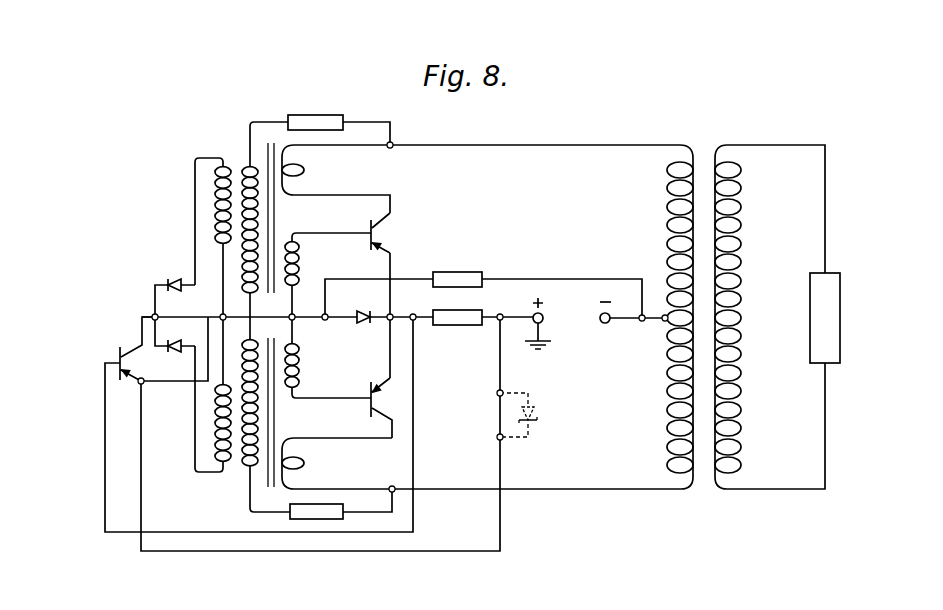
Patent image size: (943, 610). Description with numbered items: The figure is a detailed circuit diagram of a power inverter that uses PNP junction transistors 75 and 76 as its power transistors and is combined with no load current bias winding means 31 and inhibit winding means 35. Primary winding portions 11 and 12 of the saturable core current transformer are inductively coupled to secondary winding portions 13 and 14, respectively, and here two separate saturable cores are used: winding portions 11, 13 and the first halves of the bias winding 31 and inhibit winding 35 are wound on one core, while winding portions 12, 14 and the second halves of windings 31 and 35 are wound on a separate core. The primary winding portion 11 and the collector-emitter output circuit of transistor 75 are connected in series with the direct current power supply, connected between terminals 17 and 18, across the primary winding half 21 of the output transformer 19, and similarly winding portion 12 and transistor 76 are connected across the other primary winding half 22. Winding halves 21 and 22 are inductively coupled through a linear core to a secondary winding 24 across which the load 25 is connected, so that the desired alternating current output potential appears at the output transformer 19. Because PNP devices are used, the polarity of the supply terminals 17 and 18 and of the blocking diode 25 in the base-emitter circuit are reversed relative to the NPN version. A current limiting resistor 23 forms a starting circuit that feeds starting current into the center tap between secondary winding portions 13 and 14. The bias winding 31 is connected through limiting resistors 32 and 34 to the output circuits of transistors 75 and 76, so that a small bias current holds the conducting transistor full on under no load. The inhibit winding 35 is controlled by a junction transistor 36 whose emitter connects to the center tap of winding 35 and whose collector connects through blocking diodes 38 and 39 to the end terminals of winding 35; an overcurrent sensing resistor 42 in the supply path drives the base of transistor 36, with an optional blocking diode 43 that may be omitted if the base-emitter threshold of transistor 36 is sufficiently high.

The primary winding portion 11 is at (306, 170).
The primary winding portion 12 is at (306, 461).
The secondary winding portion 13 is at (300, 257).
The secondary winding portion 14 is at (308, 369).
The positive terminal 17 is at (532, 322).
The grounded negative terminal 18 is at (607, 324).
The output transformer 19 is at (702, 158).
The primary winding half 21 is at (667, 203).
The primary winding half 22 is at (667, 430).
The current limiting resistor 23 is at (452, 273).
The secondary winding 24 is at (742, 294).
The load 25 is at (361, 325).
The no load current bias winding 31 is at (246, 163).
The limiting resistor 32 is at (315, 120).
The limiting resistor 34 is at (327, 520).
The inhibit winding 35 is at (215, 196).
The junction transistor 36 is at (118, 352).
The blocking diode 38 is at (177, 279).
The blocking diode 39 is at (178, 338).
The overcurrent sensing resistor 42 is at (464, 321).
The blocking diode 43 is at (538, 413).
The PNP junction transistor 75 is at (370, 221).
The PNP junction transistor 76 is at (367, 400).